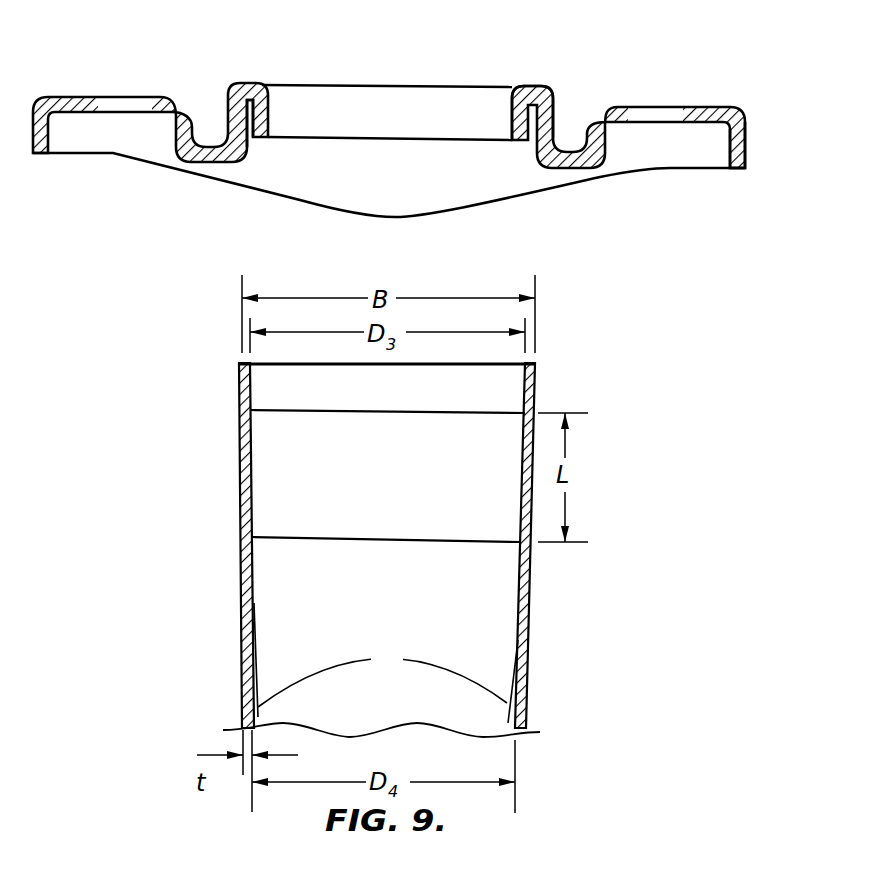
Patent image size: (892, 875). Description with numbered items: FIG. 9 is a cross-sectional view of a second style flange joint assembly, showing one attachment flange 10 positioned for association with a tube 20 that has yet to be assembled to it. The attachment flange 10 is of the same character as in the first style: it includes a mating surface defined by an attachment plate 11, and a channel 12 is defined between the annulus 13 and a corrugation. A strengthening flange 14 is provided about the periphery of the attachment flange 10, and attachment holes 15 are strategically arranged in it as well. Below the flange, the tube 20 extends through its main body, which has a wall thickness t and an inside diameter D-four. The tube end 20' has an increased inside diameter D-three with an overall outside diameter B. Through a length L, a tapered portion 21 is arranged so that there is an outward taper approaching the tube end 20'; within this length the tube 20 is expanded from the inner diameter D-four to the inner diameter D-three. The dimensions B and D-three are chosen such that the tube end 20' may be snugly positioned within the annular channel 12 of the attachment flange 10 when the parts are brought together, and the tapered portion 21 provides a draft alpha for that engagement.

The attachment flange 10 is at (732, 92).
The attachment plate 11 is at (70, 95).
The channel 12 is at (247, 132).
The annulus 13 is at (511, 117).
The strengthening flange 14 is at (745, 145).
The attachment holes 15 is at (645, 118).
The tube 20 is at (343, 545).
The tube end 20' is at (438, 540).
The tapered portion 21 is at (240, 468).